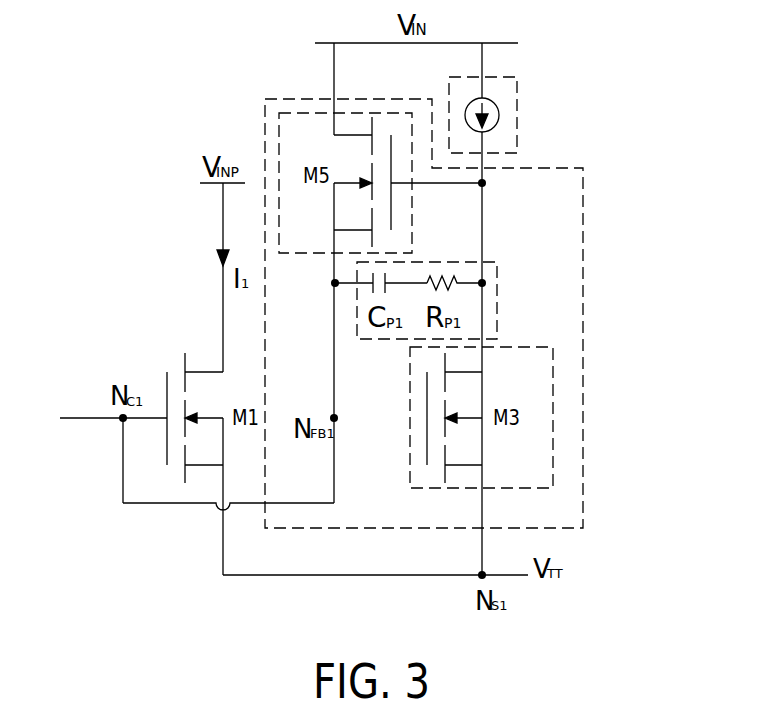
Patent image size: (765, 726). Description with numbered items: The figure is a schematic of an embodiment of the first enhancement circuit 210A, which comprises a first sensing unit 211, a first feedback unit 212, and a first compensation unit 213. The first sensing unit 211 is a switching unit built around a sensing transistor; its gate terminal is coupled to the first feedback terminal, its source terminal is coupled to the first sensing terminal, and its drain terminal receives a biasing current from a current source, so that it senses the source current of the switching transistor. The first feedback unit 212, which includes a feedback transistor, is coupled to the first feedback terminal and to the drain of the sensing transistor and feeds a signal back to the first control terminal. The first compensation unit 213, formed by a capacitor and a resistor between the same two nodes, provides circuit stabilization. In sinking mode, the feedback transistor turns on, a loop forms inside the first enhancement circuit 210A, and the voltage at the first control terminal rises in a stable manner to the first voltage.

The first enhancement circuit 210A is at (567, 168).
The first sensing unit 211 is at (553, 437).
The first feedback unit 212 is at (303, 112).
The first compensation unit 213 is at (448, 262).